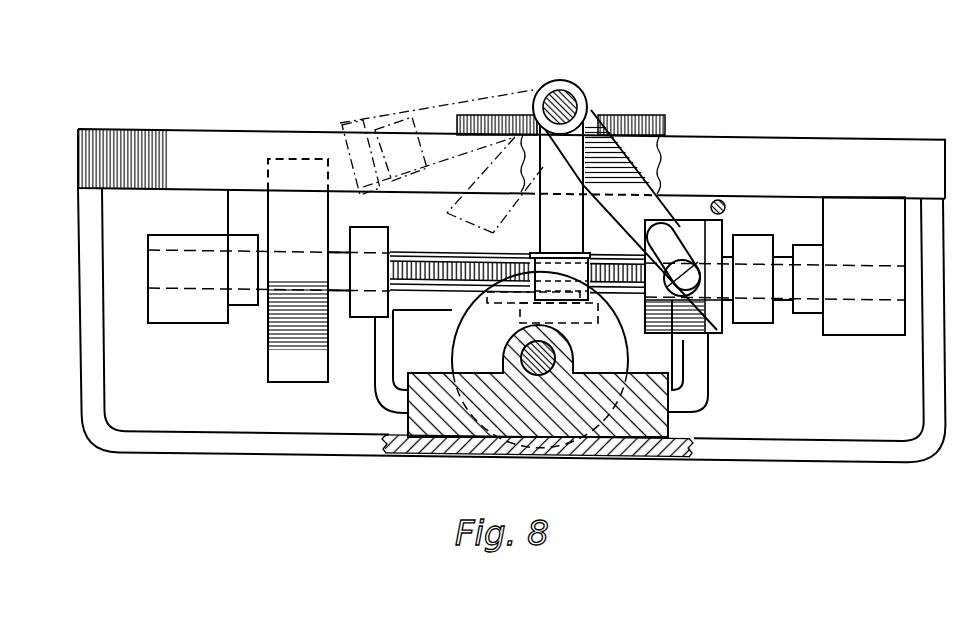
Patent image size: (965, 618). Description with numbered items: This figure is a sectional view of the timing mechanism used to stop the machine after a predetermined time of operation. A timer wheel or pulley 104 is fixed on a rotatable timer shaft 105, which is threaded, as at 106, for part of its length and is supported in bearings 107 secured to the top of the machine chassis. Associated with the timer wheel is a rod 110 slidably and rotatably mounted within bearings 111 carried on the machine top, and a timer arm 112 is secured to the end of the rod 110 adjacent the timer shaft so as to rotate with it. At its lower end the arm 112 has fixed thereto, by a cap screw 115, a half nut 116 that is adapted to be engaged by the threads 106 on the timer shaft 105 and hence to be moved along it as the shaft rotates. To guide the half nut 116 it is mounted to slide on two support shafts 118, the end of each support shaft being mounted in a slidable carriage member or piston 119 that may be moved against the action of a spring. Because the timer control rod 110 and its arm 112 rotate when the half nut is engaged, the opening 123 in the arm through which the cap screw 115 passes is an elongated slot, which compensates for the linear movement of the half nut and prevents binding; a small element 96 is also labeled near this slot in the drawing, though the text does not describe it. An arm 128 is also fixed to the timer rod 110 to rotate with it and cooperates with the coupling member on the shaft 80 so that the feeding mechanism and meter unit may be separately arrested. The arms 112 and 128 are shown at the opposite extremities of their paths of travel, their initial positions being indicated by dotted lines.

The shaft 80 is at (553, 353).
The pin 96 is at (726, 204).
The timer wheel 104 is at (283, 360).
The timer shaft 105 is at (338, 283).
The threads 106 is at (425, 253).
The bearings 107 is at (212, 318).
The rod 110 is at (575, 88).
The bearings 111 is at (665, 122).
The timer arm 112 is at (628, 180).
The cap screw 115 is at (718, 337).
The half nut 116 is at (724, 222).
The support shafts 118 is at (462, 247).
The slidable carriage member 119 is at (762, 315).
The opening 123 is at (655, 237).
The arm 128 is at (550, 224).